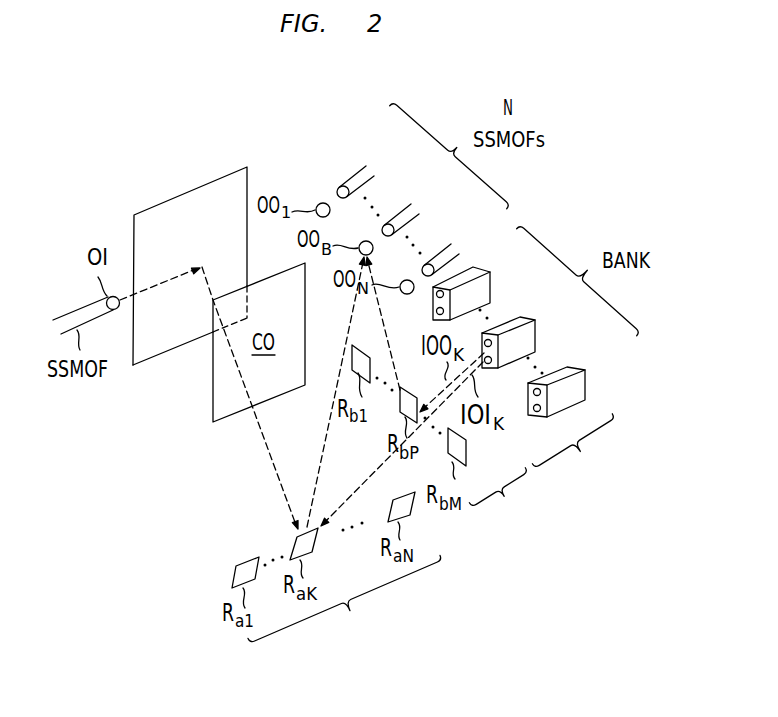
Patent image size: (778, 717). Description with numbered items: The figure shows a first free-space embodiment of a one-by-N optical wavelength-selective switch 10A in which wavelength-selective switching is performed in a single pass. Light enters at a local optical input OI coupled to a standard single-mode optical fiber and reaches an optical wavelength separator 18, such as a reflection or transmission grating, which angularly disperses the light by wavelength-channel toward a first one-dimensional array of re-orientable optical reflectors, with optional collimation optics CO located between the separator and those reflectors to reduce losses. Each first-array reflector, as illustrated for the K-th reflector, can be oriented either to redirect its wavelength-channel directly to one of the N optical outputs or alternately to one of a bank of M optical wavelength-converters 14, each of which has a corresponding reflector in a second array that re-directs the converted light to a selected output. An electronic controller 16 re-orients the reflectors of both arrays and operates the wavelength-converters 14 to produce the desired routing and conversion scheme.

The 1×N OWSS 10A is at (182, 503).
The optical wavelength-converter 14 is at (490, 272).
The electronic controller 16 is at (578, 463).
The optical wavelength separator 18 is at (203, 186).